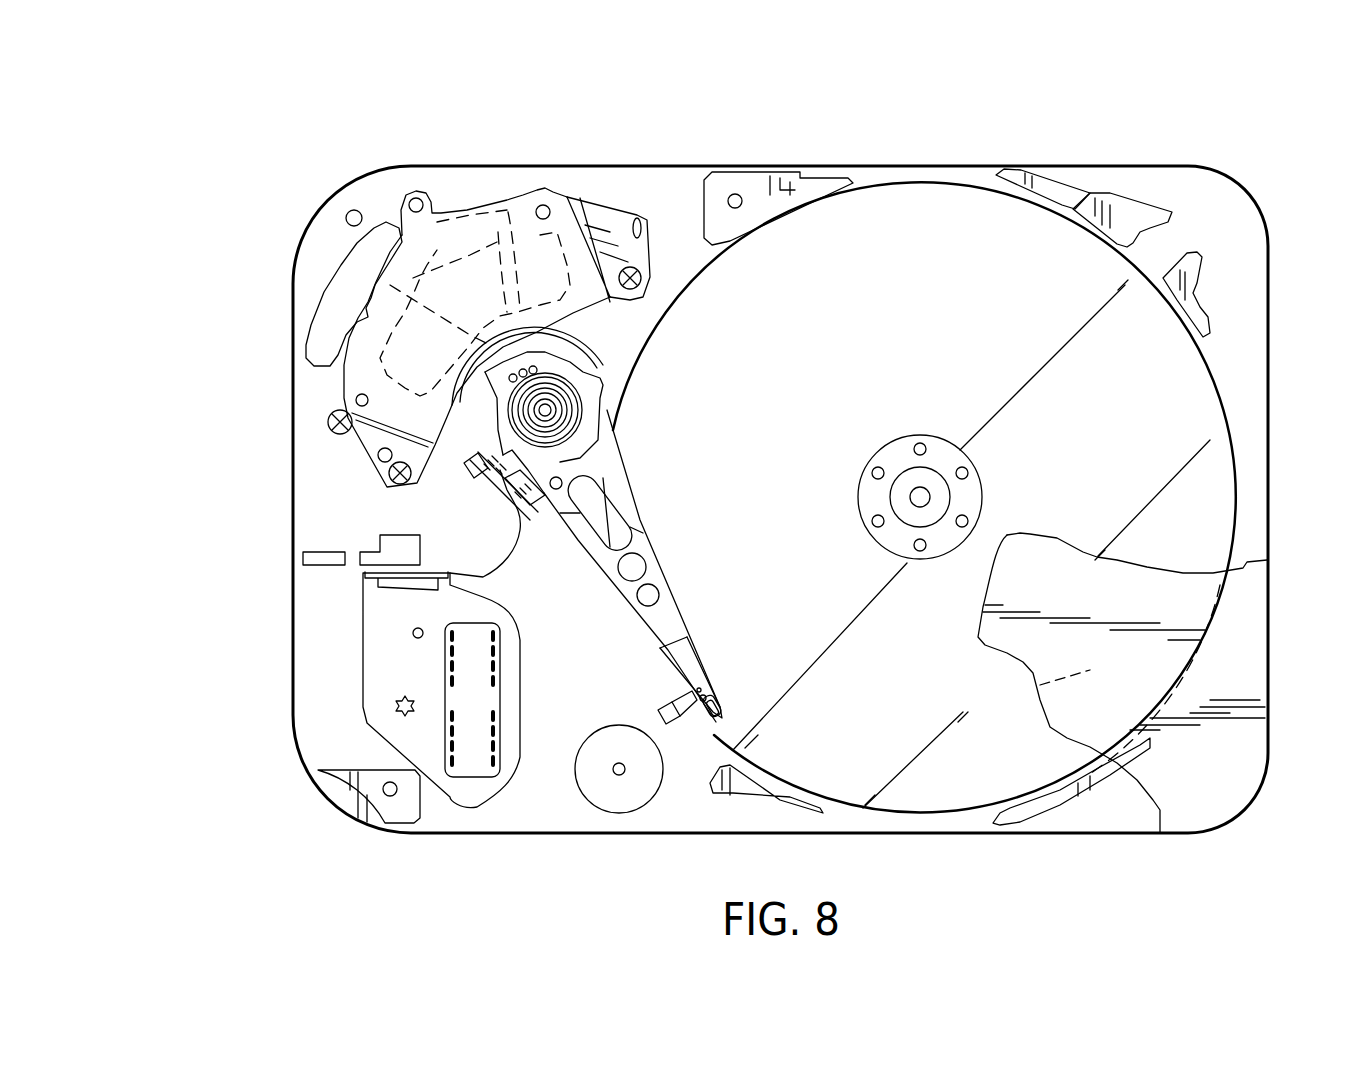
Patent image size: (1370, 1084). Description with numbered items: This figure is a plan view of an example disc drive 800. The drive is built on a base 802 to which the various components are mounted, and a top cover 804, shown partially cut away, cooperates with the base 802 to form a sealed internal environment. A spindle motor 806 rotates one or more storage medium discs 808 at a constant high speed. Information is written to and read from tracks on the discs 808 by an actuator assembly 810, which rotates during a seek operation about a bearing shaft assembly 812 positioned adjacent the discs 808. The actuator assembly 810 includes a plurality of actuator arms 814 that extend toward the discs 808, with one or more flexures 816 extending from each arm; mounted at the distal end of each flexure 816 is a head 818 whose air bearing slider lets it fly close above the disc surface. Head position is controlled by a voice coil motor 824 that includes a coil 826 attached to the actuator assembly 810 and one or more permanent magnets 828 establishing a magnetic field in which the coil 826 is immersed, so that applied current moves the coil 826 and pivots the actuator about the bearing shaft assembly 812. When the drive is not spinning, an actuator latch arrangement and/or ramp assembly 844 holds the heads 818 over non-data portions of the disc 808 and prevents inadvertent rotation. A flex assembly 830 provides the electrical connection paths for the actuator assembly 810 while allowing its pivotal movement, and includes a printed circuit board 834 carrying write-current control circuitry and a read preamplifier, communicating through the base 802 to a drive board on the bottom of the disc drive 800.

The disc drive 800 is at (258, 158).
The base 802 is at (668, 185).
The top cover 804 is at (1245, 700).
The spindle motor 806 is at (930, 495).
The storage medium disc 808 is at (895, 240).
The actuator assembly 810 is at (648, 497).
The bearing shaft assembly 812 is at (548, 410).
The actuator arm 814 is at (655, 555).
The flexure 816 is at (700, 640).
The head 818 is at (720, 700).
The voice coil motor 824 is at (508, 188).
The coil 826 is at (418, 185).
The permanent magnet 828 is at (585, 200).
The flex assembly 830 is at (514, 563).
The printed circuit board 834 is at (382, 655).
The actuator latch arrangement and/or ramp assembly 844 is at (677, 718).